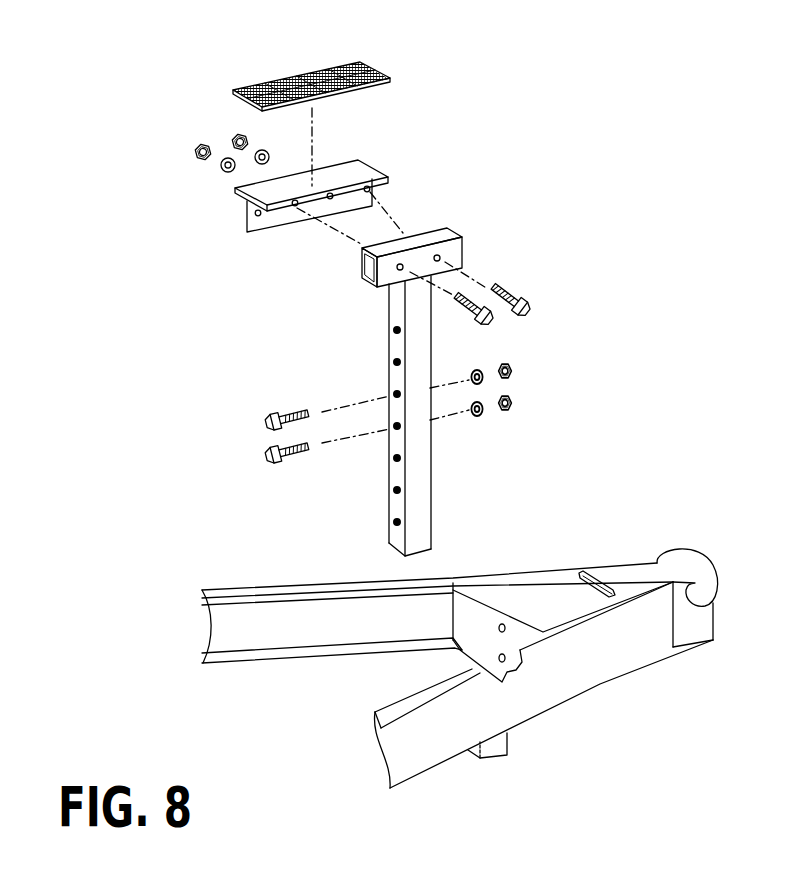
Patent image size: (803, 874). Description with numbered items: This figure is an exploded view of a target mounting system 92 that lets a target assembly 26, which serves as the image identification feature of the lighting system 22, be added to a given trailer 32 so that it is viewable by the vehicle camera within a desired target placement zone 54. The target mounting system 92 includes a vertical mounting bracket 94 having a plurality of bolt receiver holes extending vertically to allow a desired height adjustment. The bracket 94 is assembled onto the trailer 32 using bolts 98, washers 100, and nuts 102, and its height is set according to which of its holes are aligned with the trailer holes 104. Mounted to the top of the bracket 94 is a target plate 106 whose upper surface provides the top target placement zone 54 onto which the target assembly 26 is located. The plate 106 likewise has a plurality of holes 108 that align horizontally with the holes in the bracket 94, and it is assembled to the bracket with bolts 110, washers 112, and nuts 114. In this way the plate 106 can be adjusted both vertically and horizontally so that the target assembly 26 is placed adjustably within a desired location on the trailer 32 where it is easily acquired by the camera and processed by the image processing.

The lighting system 22 is at (316, 58).
The trailer target assembly 26 is at (370, 61).
The trailer 32 is at (456, 654).
The target placement zone 54 is at (307, 218).
The target mounting system 92 is at (454, 392).
The vertical mounting bracket 94 is at (417, 527).
The bolts 98 is at (265, 430).
The washers 100 is at (480, 384).
The nuts 102 is at (510, 377).
The trailer holes 104 is at (502, 624).
The target plate 106 is at (250, 186).
The holes 108 is at (288, 210).
The bolts 110 is at (497, 296).
The washers 112 is at (256, 161).
The nuts 114 is at (233, 149).